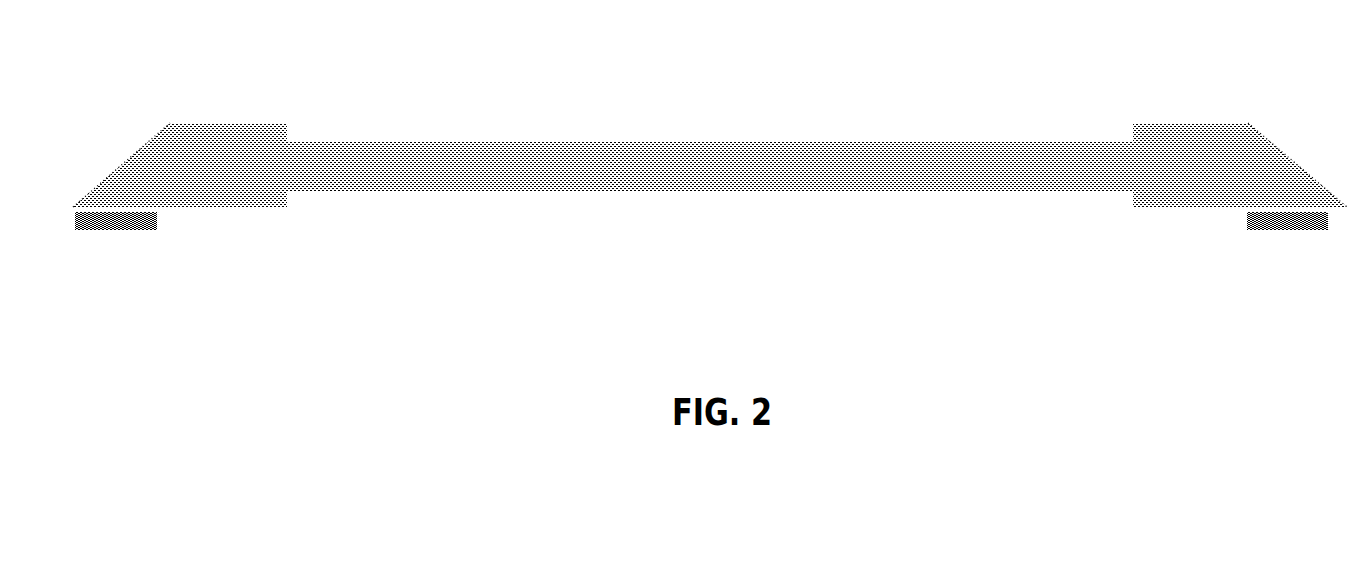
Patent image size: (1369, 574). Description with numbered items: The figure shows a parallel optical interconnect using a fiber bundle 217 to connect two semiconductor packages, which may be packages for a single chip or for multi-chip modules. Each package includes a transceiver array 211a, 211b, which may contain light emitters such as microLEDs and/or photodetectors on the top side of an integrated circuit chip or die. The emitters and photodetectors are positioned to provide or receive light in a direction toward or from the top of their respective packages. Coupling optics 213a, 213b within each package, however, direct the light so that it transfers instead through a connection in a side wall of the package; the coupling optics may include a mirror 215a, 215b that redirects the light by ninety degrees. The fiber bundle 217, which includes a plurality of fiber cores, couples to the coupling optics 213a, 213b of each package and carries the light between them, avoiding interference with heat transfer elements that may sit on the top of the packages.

The fiber bundle 217 is at (677, 140).
The coupling optics 213a is at (263, 127).
The coupling optics 213b is at (1220, 127).
The mirror 215a is at (113, 170).
The mirror 215b is at (1283, 156).
The transceiver array 211a is at (127, 225).
The transceiver array 211b is at (1288, 225).